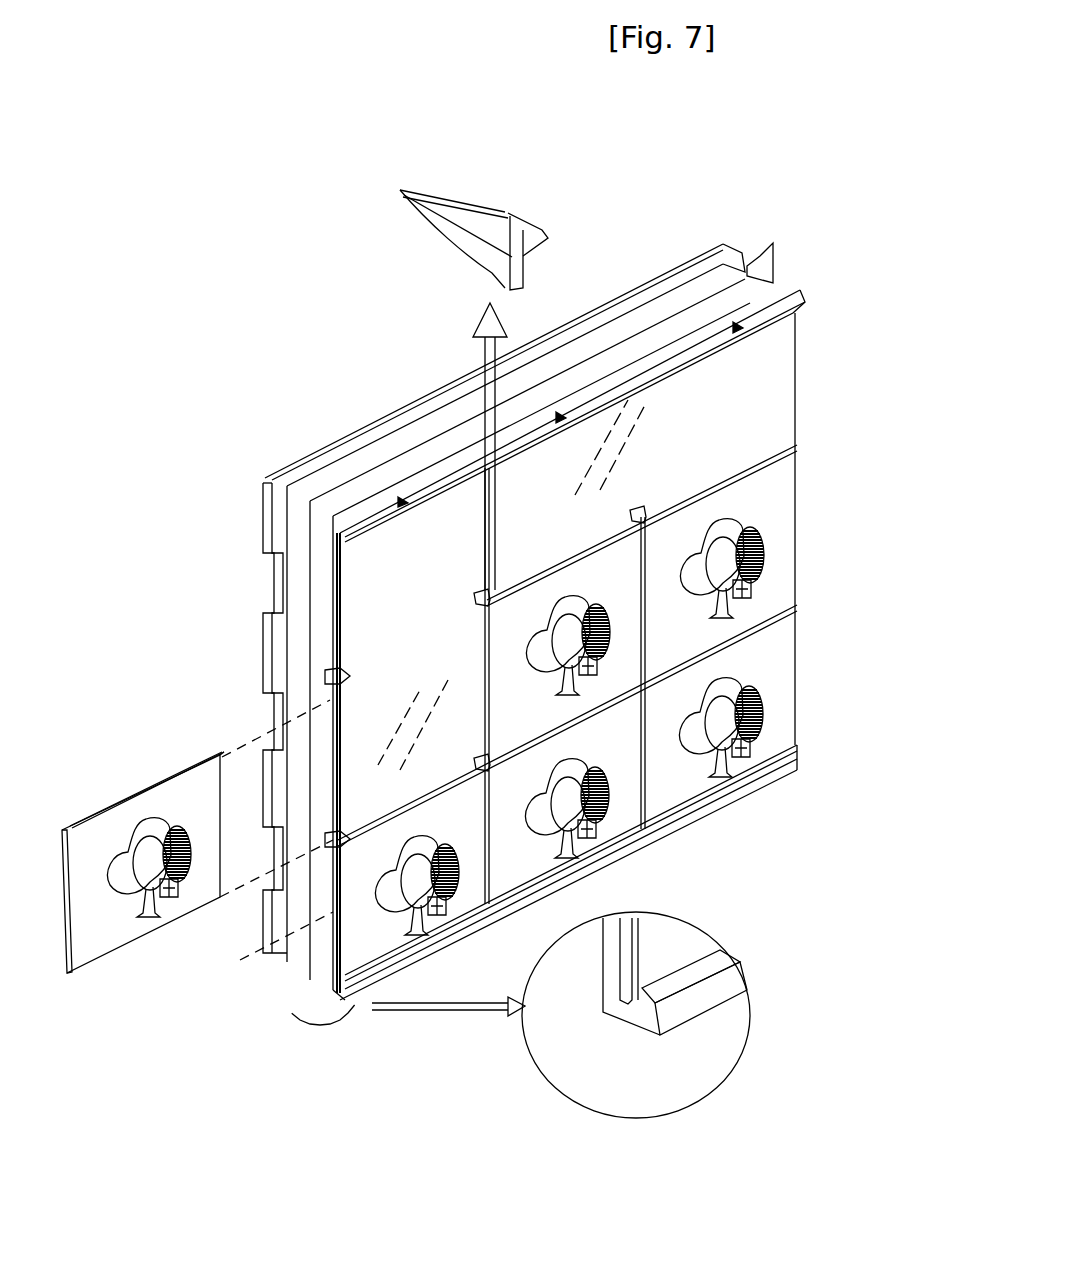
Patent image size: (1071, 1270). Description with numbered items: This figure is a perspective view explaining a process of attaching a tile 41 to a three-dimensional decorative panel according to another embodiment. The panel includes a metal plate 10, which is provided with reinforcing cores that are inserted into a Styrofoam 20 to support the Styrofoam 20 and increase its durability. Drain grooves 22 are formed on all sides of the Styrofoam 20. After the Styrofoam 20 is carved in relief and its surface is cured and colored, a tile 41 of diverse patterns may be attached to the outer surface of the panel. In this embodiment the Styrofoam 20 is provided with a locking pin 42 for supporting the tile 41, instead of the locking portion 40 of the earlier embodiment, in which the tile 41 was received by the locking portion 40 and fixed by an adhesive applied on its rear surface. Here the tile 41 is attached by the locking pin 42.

The metal plate 10 is at (343, 445).
The Styrofoam 20 is at (778, 381).
The drain grooves 22 is at (770, 262).
The locking portion 40 is at (655, 1037).
The tile 41 is at (113, 940).
The locking pin 42 is at (508, 206).